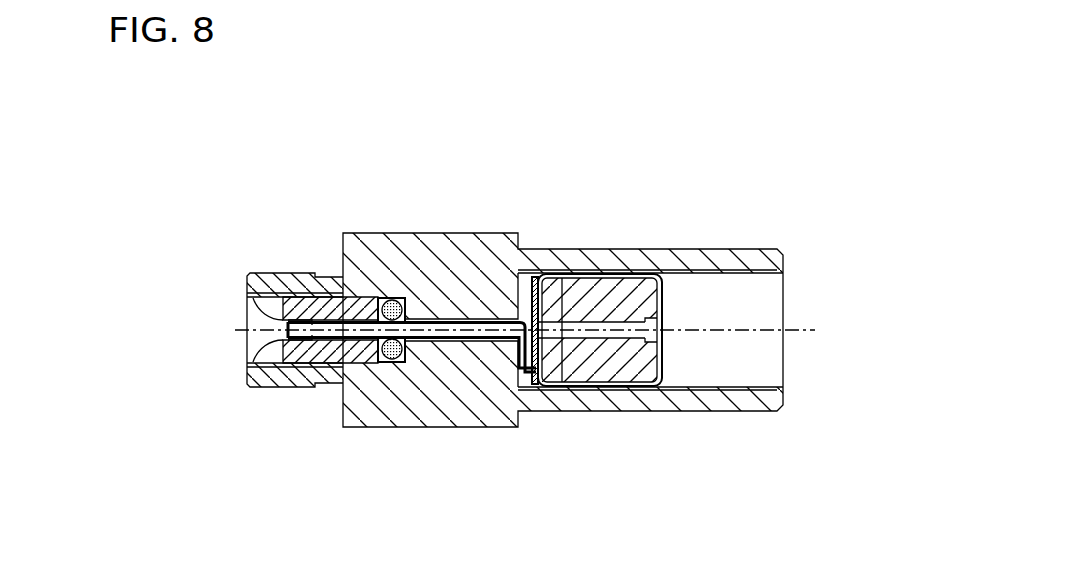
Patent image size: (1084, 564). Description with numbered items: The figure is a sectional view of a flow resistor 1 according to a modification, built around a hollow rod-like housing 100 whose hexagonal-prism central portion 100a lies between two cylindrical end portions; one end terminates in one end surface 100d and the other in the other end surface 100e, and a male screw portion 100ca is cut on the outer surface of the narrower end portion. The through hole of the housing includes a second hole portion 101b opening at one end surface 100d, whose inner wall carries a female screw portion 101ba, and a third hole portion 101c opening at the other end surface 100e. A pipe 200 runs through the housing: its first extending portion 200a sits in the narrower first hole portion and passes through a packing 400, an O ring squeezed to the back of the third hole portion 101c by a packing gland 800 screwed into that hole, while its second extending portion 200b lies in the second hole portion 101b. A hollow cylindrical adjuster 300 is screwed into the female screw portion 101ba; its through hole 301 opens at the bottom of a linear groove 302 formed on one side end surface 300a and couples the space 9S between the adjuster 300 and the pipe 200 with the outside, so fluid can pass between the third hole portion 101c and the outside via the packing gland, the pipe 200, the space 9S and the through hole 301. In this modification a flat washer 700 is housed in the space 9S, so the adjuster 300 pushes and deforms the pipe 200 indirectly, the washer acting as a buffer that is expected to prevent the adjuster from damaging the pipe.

The flow resistor 1 is at (706, 127).
The housing 100 is at (411, 244).
The central portion 100a is at (420, 245).
The male screw portion 100ca is at (284, 275).
The one end surface 100d is at (784, 262).
The other end surface 100e is at (248, 283).
The second hole portion 101b is at (518, 252).
The female screw portion 101ba is at (756, 273).
The third hole portion 101c is at (262, 356).
The pipe 200 is at (437, 340).
The first extending portion 200a is at (319, 318).
The second extending portion 200b is at (525, 375).
The adjuster 300 is at (632, 292).
The one side end surface 300a is at (663, 282).
The through hole 301 is at (594, 340).
The groove 302 is at (660, 340).
The packing 400 is at (386, 299).
The washer 700 is at (536, 277).
The packing gland 800 is at (281, 350).
The space 9S is at (503, 318).